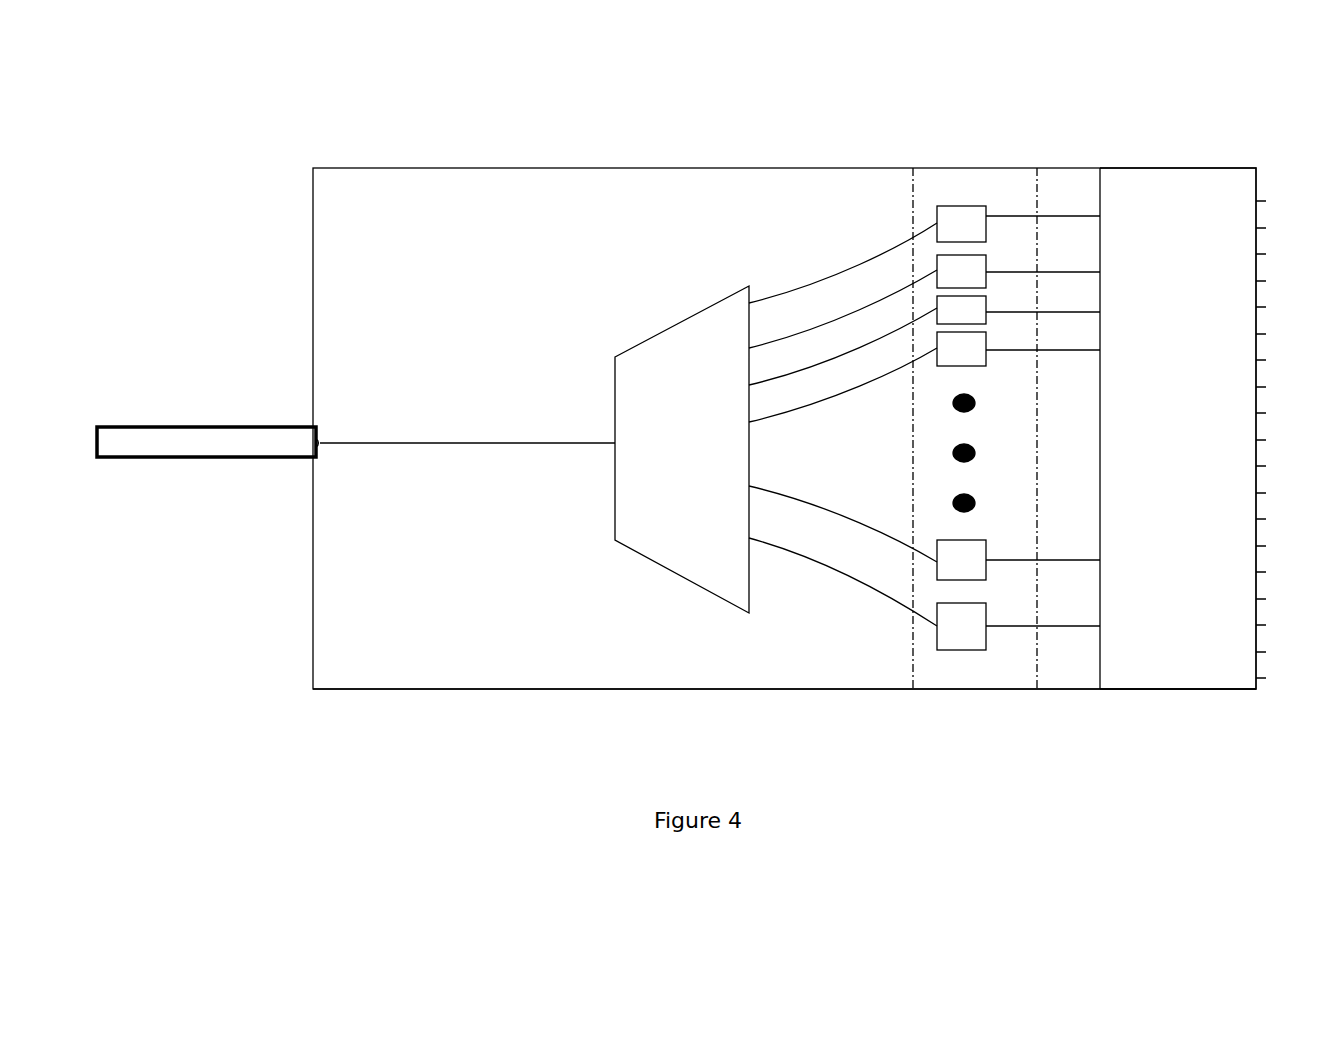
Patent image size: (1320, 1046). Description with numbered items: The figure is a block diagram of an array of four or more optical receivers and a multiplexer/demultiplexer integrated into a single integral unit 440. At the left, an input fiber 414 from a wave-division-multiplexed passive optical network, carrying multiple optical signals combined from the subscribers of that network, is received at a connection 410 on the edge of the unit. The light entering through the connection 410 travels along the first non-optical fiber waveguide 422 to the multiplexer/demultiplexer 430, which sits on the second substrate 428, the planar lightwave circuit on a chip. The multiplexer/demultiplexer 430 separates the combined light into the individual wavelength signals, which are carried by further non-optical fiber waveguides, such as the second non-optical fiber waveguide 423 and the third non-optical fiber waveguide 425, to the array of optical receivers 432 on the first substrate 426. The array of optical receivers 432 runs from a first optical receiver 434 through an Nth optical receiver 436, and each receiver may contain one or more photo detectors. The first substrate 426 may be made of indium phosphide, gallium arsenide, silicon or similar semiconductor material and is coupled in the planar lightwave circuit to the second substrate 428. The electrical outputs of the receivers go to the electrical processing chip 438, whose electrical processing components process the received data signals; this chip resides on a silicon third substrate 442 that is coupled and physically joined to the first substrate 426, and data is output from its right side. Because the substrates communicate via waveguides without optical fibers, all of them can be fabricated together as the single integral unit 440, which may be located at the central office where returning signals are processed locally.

The connection 410 is at (343, 422).
The input fiber from WDM PON 414 is at (204, 470).
The first non-optical fiber waveguide 422 is at (551, 470).
The second non-optical fiber waveguide 423 is at (803, 578).
The third non-optical fiber waveguide 425 is at (813, 256).
The first substrate 426 is at (1006, 428).
The second substrate 428 is at (784, 428).
The multiplexer/demultiplexer 430 is at (682, 449).
The array of optical receivers 432 is at (973, 141).
The first optical receiver 434 is at (1003, 188).
The Nth optical receiver 436 is at (947, 670).
The electrical processing chip 438 is at (1146, 672).
The integral unit 440 is at (565, 712).
The third substrate 442 is at (1178, 428).